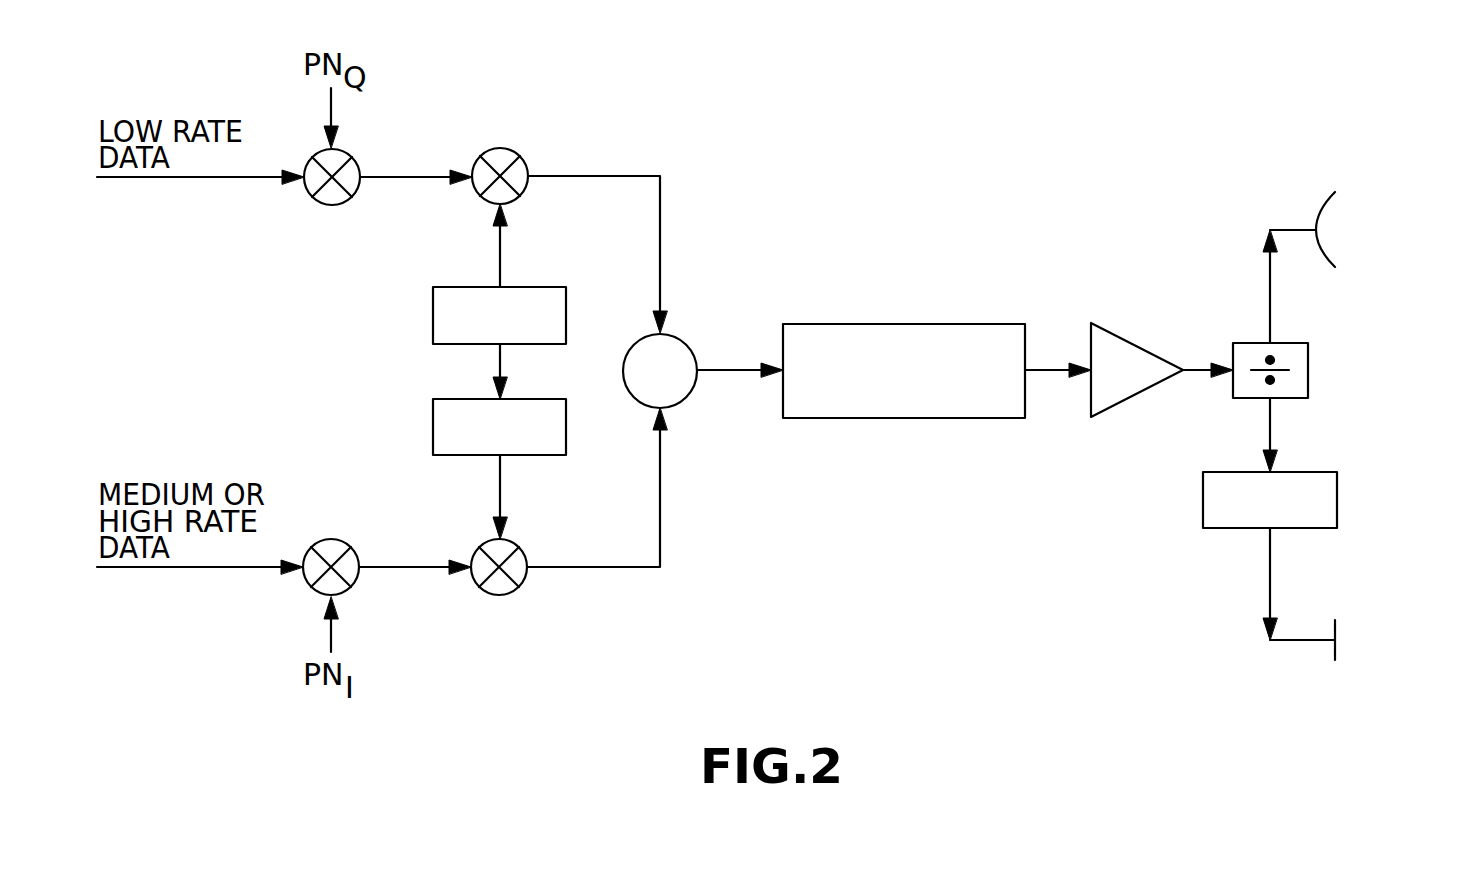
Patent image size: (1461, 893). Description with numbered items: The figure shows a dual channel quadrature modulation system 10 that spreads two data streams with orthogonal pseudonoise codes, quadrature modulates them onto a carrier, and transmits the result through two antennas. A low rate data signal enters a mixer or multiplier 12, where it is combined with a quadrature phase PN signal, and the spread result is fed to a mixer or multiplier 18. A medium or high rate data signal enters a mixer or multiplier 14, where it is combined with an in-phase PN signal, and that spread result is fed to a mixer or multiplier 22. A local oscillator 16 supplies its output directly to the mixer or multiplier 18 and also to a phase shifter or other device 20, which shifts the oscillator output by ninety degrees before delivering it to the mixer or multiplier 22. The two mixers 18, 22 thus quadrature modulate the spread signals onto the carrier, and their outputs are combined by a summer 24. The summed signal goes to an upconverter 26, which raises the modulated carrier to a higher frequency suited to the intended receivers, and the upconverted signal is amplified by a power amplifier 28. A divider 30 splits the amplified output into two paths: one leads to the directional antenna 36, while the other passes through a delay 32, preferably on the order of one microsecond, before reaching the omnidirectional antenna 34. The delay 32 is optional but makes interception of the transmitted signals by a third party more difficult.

The dual channel quadrature modulation system 10 is at (893, 190).
The mixer or multiplier 12 is at (351, 158).
The mixer or multiplier 14 is at (313, 590).
The local oscillator 16 is at (433, 322).
The mixer or multiplier 18 is at (520, 156).
The phase shifter or other device 20 is at (433, 428).
The mixer or multiplier 22 is at (519, 587).
The summer 24 is at (678, 338).
The upconverter 26 is at (885, 418).
The power amplifier 28 is at (1130, 347).
The divider 30 is at (1308, 380).
The delay 32 is at (1203, 500).
The omnidirectional antenna 34 is at (1337, 647).
The directional antenna 36 is at (1330, 208).